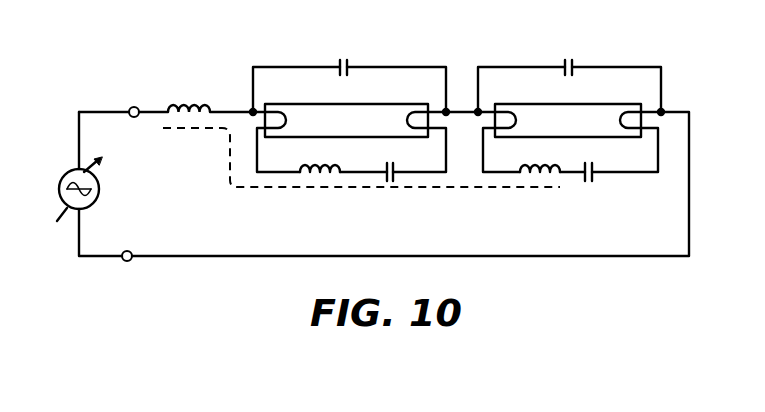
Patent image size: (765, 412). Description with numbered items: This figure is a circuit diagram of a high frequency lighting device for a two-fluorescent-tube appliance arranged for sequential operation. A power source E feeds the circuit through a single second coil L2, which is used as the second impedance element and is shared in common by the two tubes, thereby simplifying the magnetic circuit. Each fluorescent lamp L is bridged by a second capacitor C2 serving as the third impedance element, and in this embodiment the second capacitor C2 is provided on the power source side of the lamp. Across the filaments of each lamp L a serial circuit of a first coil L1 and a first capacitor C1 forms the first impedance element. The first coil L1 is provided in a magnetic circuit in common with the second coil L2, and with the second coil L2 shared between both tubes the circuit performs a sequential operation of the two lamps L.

The power source E is at (68, 189).
The second coil L2 is at (189, 98).
The lamp L is at (453, 120).
The second capacitor C2 is at (457, 76).
The first coil L1 is at (361, 172).
The first capacitor C1 is at (499, 154).